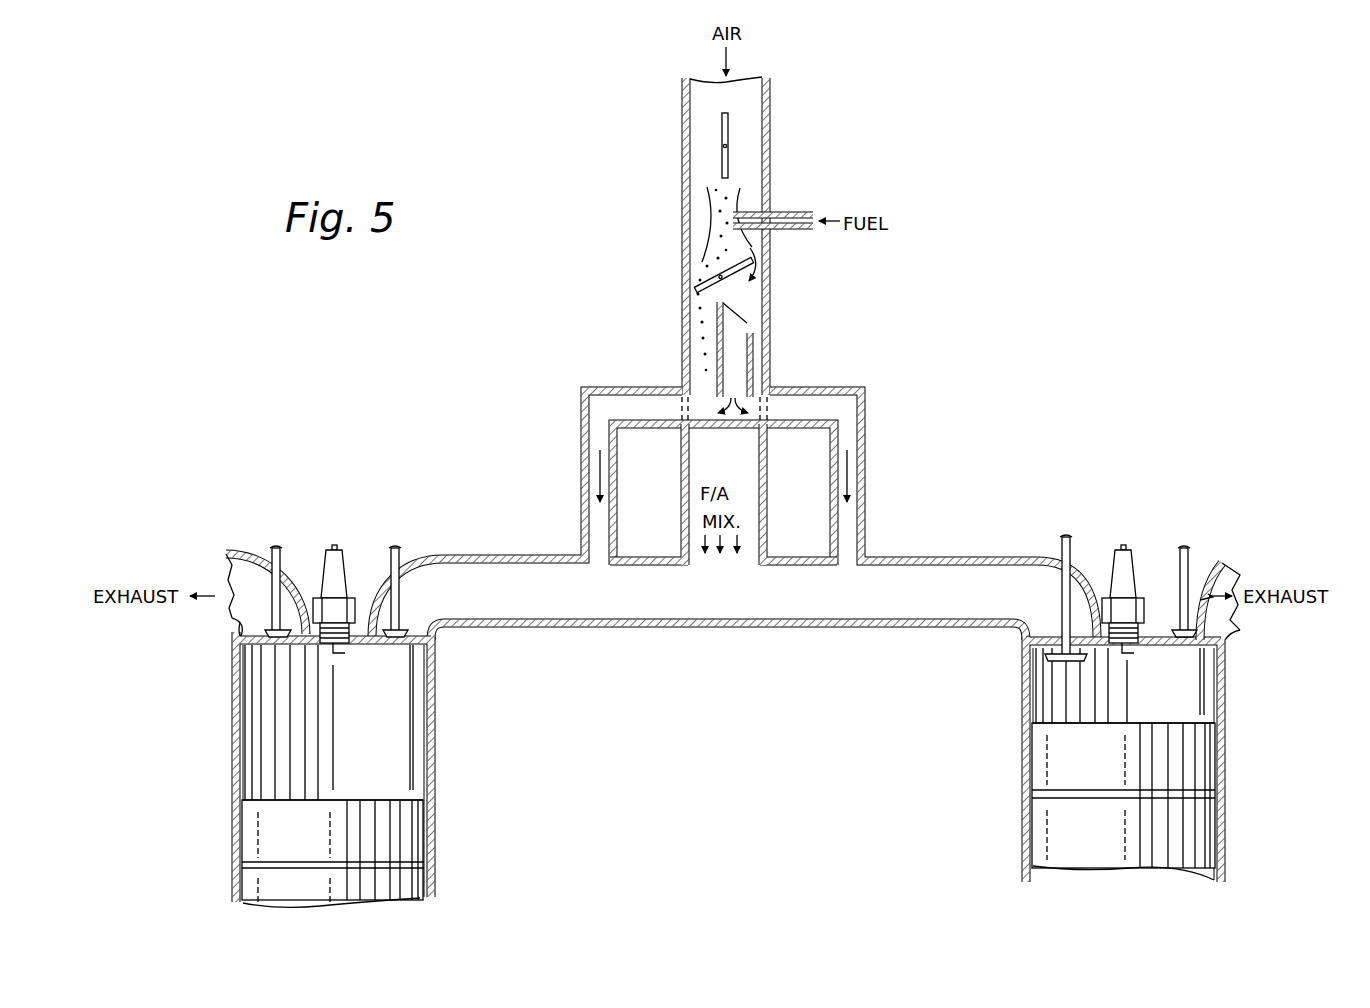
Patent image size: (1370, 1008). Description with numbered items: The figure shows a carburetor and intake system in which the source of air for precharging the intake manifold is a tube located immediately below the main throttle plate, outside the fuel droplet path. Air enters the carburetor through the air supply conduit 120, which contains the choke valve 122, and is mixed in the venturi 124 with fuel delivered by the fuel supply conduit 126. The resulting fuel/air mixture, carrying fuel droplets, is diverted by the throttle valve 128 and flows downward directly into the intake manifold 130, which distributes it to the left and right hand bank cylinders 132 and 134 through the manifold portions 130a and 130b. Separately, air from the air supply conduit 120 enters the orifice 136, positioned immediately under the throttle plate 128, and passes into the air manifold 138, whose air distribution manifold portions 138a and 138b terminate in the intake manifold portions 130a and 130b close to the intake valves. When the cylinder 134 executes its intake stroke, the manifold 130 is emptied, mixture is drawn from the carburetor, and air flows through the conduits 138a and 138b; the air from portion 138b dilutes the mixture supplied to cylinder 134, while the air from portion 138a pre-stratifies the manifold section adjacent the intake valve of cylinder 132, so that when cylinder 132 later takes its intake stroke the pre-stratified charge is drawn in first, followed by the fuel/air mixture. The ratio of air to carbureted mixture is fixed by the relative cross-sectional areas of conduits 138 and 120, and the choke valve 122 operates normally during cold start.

The air supply conduit 120 is at (683, 196).
The choke valve 122 is at (730, 131).
The venturi 124 is at (708, 246).
The fuel supply conduit 126 is at (794, 230).
The throttle valve 128 is at (700, 293).
The intake manifold 130 is at (931, 558).
The manifold portion 130a is at (540, 630).
The manifold portion 130b is at (947, 630).
The left hand bank cylinder 132 is at (437, 762).
The right hand bank cylinder 134 is at (1022, 766).
The orifice 136 is at (747, 323).
The air manifold 138 is at (757, 362).
The air distribution manifold portion 138a is at (583, 478).
The air distribution manifold portion 138b is at (866, 460).